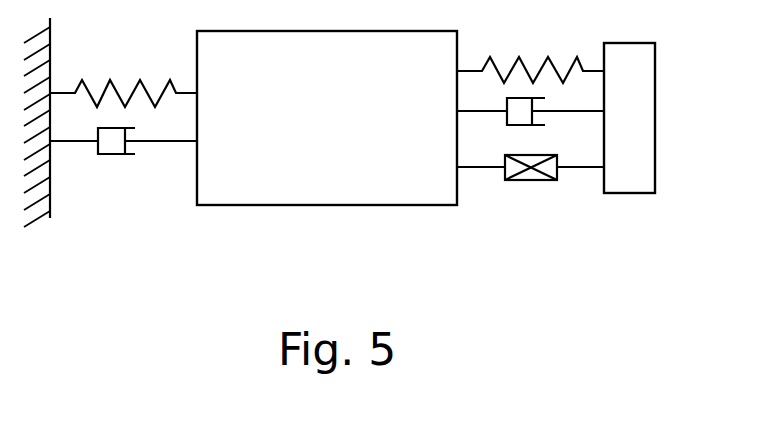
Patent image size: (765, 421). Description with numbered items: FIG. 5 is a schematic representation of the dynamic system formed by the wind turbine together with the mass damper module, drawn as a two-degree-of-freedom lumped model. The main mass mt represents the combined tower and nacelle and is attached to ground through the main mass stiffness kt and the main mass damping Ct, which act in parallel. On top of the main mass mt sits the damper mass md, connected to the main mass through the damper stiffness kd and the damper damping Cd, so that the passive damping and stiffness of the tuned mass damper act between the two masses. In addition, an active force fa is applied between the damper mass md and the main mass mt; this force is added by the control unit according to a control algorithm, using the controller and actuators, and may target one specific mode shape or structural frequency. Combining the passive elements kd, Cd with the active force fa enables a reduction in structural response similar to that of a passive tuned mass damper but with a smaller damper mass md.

The main mass mt is at (327, 118).
The main mass stiffness kt is at (123, 74).
The main mass damping Ct is at (123, 153).
The damper stiffness kd is at (530, 51).
The damper damping Cd is at (530, 123).
The active force fa is at (530, 185).
The damper mass md is at (650, 118).